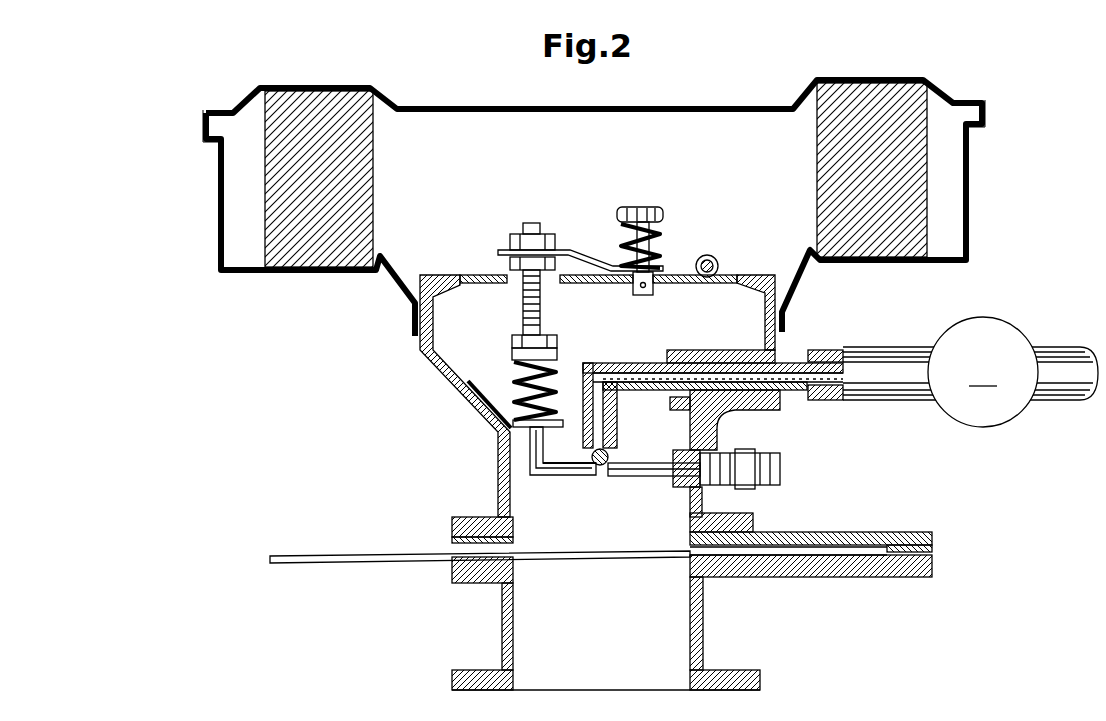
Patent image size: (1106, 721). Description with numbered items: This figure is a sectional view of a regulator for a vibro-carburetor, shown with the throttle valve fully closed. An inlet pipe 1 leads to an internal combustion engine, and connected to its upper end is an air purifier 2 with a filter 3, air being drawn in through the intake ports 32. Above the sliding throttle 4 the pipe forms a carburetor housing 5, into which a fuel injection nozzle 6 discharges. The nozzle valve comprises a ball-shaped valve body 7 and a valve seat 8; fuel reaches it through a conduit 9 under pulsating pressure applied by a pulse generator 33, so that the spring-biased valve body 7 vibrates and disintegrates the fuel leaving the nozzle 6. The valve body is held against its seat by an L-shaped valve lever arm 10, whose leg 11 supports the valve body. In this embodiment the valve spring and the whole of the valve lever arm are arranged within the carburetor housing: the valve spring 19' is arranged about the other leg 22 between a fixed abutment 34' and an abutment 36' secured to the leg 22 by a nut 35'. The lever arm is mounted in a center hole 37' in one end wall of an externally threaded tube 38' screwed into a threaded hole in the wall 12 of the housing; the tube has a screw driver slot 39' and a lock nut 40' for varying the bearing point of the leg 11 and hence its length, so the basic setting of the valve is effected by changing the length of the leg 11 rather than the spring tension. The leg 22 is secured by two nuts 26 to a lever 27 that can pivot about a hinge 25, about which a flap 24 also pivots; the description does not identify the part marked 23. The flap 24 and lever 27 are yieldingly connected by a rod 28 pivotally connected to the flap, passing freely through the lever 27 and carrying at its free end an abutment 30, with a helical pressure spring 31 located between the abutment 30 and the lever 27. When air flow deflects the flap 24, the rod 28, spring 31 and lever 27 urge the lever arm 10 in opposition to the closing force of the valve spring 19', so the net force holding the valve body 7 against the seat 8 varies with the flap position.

The inlet pipe 1 is at (500, 626).
The air purifier 2 is at (218, 201).
The filter 3 is at (322, 270).
The throttle 4 is at (332, 554).
The carburetor housing 5 is at (498, 463).
The fuel injection nozzle 6 is at (612, 420).
The valve body 7 is at (600, 468).
The valve seat 8 is at (608, 458).
The conduit 9 is at (800, 356).
The valve lever arm 10 is at (553, 505).
The leg 11 is at (652, 472).
The wall 12 is at (700, 433).
The valve spring 19' is at (519, 394).
The leg 22 is at (522, 320).
The cover plate 23 is at (512, 283).
The flap 24 is at (590, 283).
The hinge 25 is at (717, 262).
The nuts 26 is at (548, 234).
The lever 27 is at (570, 250).
The rod 28 is at (663, 245).
The abutment 30 is at (656, 213).
The helical pressure spring 31 is at (660, 226).
The intake ports 32 is at (212, 123).
The pulse generator 33 is at (970, 372).
The fixed abutment 34' is at (474, 413).
The nut 35' is at (554, 329).
The abutment 36' is at (554, 347).
The center hole 37' is at (674, 452).
The externally threaded tube 38' is at (754, 452).
The screw driver slot 39' is at (781, 467).
The lock nut 40' is at (744, 509).